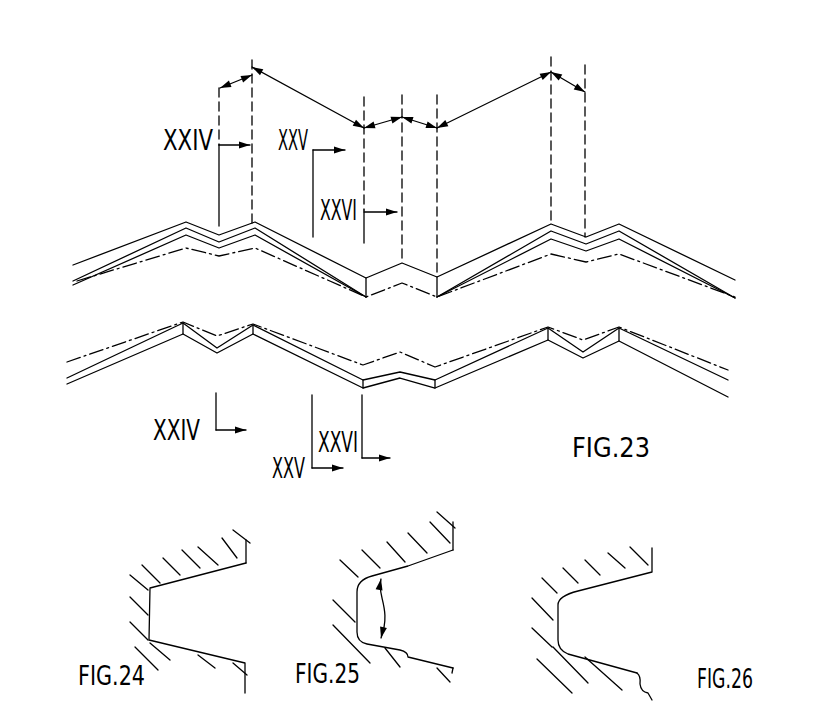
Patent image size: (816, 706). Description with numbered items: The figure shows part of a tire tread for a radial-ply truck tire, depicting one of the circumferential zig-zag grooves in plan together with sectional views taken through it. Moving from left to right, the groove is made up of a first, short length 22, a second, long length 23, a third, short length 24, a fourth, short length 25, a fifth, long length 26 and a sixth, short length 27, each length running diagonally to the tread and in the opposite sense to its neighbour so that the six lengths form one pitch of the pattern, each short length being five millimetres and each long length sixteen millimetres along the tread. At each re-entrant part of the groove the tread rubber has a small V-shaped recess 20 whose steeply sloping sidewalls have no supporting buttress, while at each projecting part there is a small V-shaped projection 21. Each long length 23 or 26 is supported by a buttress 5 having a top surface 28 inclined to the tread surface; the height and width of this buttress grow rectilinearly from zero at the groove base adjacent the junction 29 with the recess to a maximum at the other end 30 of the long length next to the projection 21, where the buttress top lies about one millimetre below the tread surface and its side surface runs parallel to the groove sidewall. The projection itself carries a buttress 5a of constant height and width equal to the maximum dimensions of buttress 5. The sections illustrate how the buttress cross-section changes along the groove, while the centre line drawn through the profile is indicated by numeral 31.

In FIG. 23, the buttress 5 is at (256, 222).
In FIG. 25, the buttress 5 is at (404, 570).
In FIG. 26, the buttress 5 is at (590, 664).
In FIG. 24, the buttress of constant height and width 5a is at (218, 572).
In FIG. 23, the recess 20 is at (405, 296).
In FIG. 23, the projection 21 is at (590, 236).
In FIG. 23, the first short length 22 is at (233, 85).
In FIG. 23, the second long length 23 is at (298, 90).
In FIG. 23, the third short length 24 is at (380, 122).
In FIG. 23, the fourth short length 25 is at (417, 120).
In FIG. 23, the fifth long length 26 is at (480, 106).
In FIG. 23, the sixth short length 27 is at (565, 80).
In FIG. 23, the top surface 28 is at (293, 348).
In FIG. 24, the top surface 28 is at (240, 567).
In FIG. 25, the top surface 28 is at (419, 563).
In FIG. 26, the top surface 28 is at (645, 677).
In FIG. 23, the junction 29 is at (368, 280).
In FIG. 23, the other end of long length 30 is at (185, 220).
In FIG. 23, the center line 31 is at (288, 258).
In FIG. 25, the center line 31 is at (385, 610).